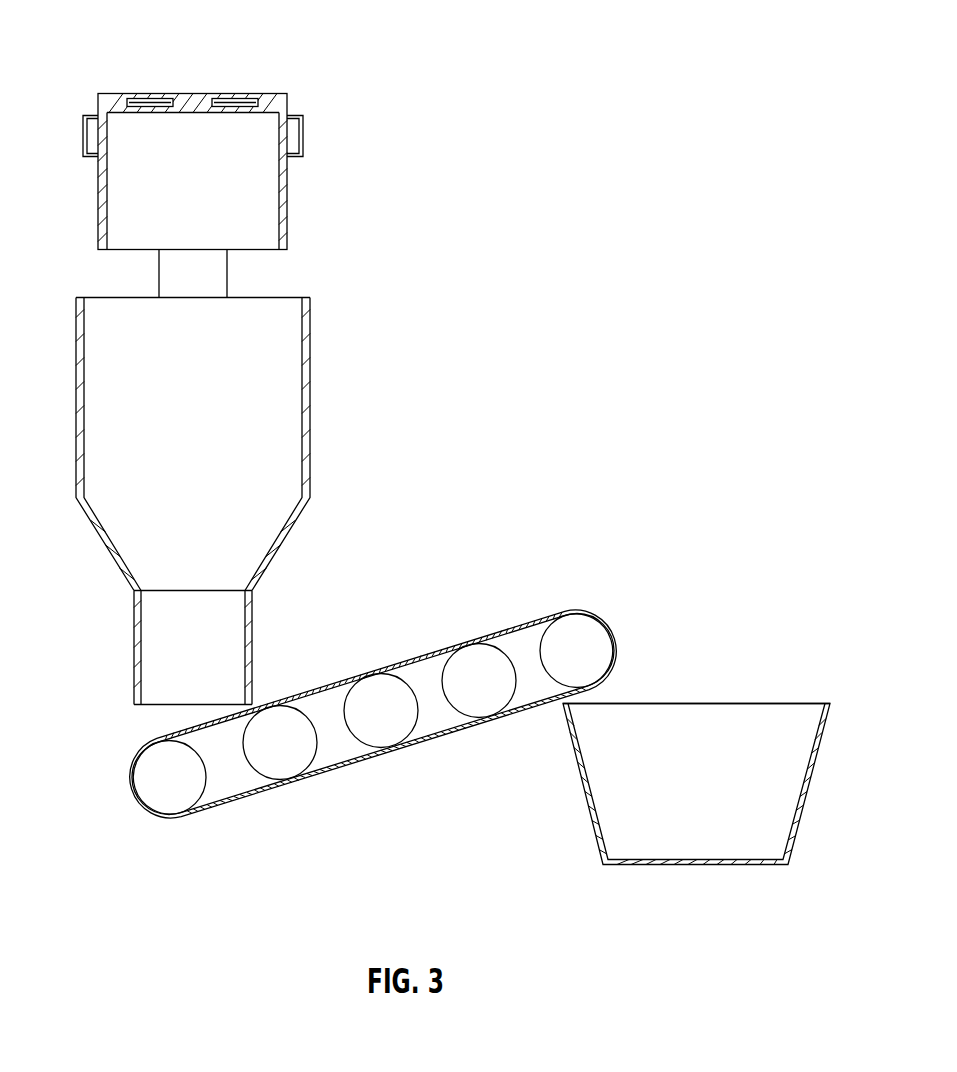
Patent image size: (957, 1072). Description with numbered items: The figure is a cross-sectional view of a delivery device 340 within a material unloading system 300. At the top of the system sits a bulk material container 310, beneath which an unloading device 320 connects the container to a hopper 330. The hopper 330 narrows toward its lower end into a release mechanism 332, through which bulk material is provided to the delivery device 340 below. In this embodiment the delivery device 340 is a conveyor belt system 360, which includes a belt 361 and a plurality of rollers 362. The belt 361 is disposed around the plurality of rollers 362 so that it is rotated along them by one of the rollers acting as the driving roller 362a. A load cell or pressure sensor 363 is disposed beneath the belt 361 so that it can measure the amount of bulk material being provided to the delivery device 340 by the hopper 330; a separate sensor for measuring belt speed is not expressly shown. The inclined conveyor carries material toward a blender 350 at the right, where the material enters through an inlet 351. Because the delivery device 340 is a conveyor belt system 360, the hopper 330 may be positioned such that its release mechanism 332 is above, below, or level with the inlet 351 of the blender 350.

The material unloading system 300 is at (342, 27).
The bulk material container 310 is at (290, 108).
The unloading device 320 is at (227, 262).
The hopper 330 is at (310, 395).
The release mechanism 332 is at (133, 660).
The delivery device 340 is at (345, 721).
The blender 350 is at (720, 757).
The inlet 351 is at (712, 701).
The conveyor belt system 360 is at (357, 697).
The belt 361 is at (357, 713).
The rollers 362 is at (345, 748).
The driving roller 362a is at (155, 780).
The load cell or pressure sensor 363 is at (173, 735).